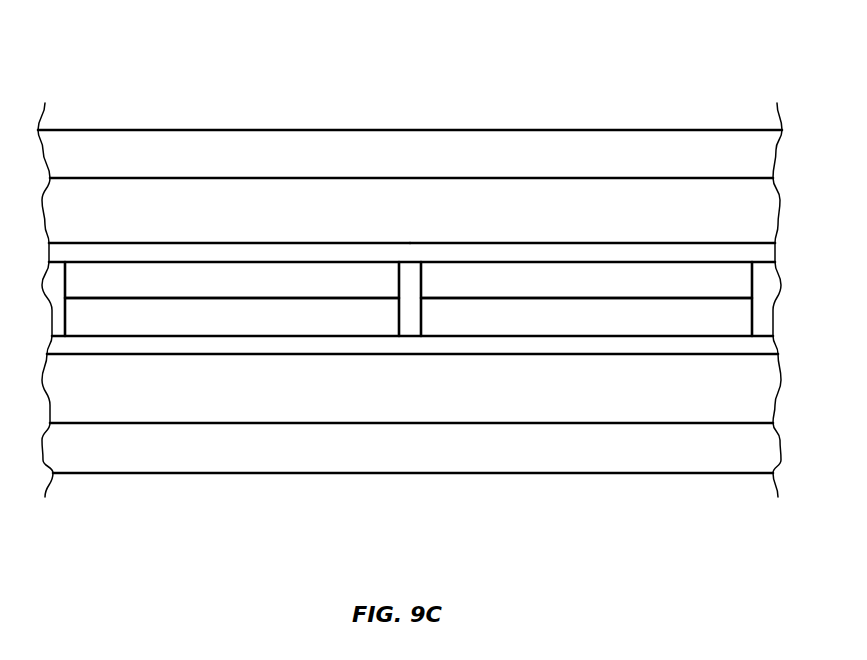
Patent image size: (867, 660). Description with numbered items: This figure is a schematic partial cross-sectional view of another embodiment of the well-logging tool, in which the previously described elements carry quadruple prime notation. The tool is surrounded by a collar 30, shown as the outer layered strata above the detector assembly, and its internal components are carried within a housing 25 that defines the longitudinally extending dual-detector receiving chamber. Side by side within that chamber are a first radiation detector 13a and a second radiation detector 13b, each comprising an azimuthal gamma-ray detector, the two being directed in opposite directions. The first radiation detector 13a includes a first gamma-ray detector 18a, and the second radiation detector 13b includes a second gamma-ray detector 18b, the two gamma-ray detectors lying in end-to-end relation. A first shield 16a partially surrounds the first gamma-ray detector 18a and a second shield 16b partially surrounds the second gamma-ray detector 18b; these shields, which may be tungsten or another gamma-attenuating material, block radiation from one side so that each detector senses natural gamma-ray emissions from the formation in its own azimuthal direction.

The collar 30 is at (682, 158).
The first radiation detector 13a is at (123, 213).
The second radiation detector 13b is at (610, 212).
The first shield 16a is at (169, 277).
The second shield 16b is at (555, 313).
The first gamma-ray detector 18a is at (280, 313).
The second gamma-ray detector 18b is at (439, 277).
The housing 25 is at (115, 345).